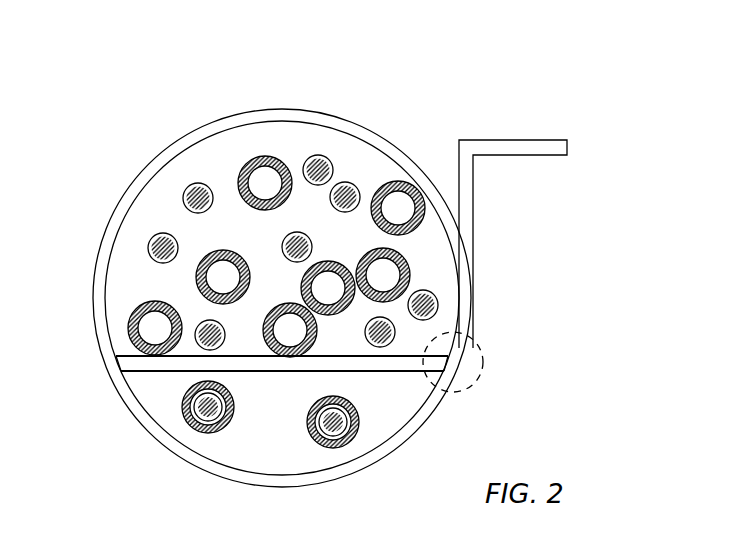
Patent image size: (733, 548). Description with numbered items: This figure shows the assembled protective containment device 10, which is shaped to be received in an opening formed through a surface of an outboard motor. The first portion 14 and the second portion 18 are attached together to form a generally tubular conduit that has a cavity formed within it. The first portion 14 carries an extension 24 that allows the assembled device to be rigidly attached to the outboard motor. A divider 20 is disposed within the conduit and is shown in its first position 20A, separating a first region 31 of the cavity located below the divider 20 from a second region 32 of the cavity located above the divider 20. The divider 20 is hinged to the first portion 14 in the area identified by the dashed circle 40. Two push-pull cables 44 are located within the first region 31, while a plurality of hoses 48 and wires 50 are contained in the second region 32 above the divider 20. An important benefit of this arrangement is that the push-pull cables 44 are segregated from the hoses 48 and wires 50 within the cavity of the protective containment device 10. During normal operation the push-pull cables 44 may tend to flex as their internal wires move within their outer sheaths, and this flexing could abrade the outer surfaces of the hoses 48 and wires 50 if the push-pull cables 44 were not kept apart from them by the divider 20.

The protective containment device 10 is at (595, 92).
The first portion 14 is at (146, 428).
The second portion 18 is at (290, 108).
The divider 20 is at (140, 372).
The first position 20A is at (375, 373).
The extension 24 is at (520, 140).
The first region 31 is at (375, 427).
The second region 32 is at (153, 203).
The dashed circle 40 is at (483, 372).
The push-pull cables 44 is at (310, 432).
The hoses 48 is at (262, 157).
The wires 50 is at (198, 183).